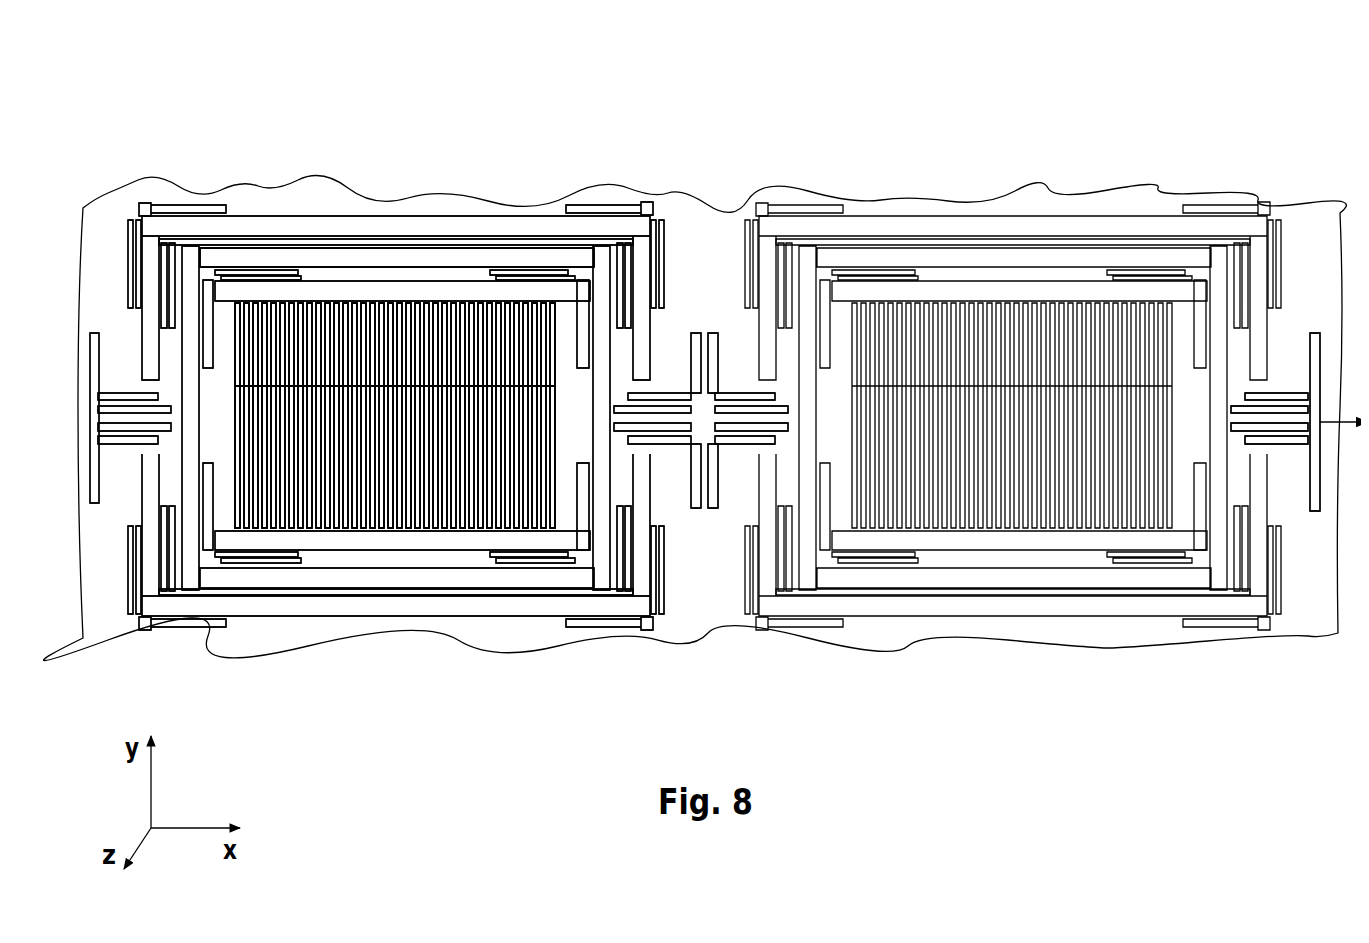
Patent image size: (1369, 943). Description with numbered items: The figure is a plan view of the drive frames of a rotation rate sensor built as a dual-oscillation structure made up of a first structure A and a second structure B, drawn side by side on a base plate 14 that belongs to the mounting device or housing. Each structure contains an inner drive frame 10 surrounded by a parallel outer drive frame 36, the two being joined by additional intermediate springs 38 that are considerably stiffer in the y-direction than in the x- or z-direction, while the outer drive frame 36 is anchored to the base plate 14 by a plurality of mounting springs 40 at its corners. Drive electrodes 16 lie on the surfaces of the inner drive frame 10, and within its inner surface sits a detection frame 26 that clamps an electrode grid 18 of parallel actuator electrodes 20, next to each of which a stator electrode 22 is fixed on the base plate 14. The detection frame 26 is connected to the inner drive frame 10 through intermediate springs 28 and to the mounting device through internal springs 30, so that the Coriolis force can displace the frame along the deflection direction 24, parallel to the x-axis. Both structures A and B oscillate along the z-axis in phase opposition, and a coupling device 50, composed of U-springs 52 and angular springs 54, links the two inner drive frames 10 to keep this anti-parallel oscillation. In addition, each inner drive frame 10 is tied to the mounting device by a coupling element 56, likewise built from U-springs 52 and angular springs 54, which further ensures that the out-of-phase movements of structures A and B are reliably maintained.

The drive frame 10 is at (429, 256).
The base plate 14 is at (711, 197).
The drive electrode 16 is at (490, 246).
The electrode grid 18 is at (961, 294).
The actuator electrode 20 is at (324, 295).
The stator electrode 22 is at (384, 295).
The deflection direction 24 is at (1335, 430).
The detection frame 26 is at (929, 288).
The intermediate spring 28 is at (530, 266).
The internal spring 30 is at (583, 318).
The outer drive frame 36 is at (260, 210).
The additional intermediate spring 38 is at (157, 270).
The mounting spring 40 is at (172, 199).
The coupling device 50 is at (692, 316).
The U-spring 52 is at (115, 424).
The angular spring 54 is at (112, 383).
The coupling element 56 is at (92, 510).
The first structure A is at (474, 124).
The second structure B is at (1151, 127).